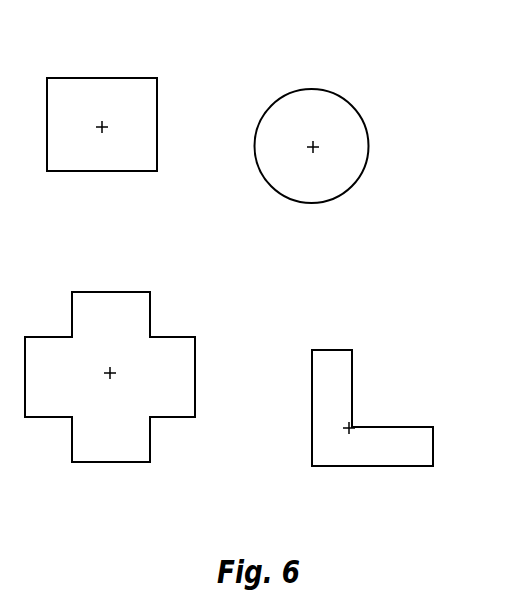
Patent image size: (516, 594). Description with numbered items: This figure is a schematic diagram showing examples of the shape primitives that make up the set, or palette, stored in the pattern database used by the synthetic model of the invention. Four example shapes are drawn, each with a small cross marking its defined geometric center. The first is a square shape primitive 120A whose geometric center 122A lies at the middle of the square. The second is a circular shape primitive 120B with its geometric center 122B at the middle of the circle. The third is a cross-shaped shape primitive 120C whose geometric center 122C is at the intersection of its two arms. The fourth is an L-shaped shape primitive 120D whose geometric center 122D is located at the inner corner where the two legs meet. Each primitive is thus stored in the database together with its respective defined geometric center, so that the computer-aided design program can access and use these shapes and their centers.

The shape primitive 120A is at (157, 92).
The geometric center 122A is at (104, 127).
The shape primitive 120B is at (317, 89).
The geometric center 122B is at (315, 150).
The shape primitive 120C is at (152, 442).
The geometric center 122C is at (113, 376).
The shape primitive 120D is at (332, 350).
The geometric center 122D is at (350, 427).